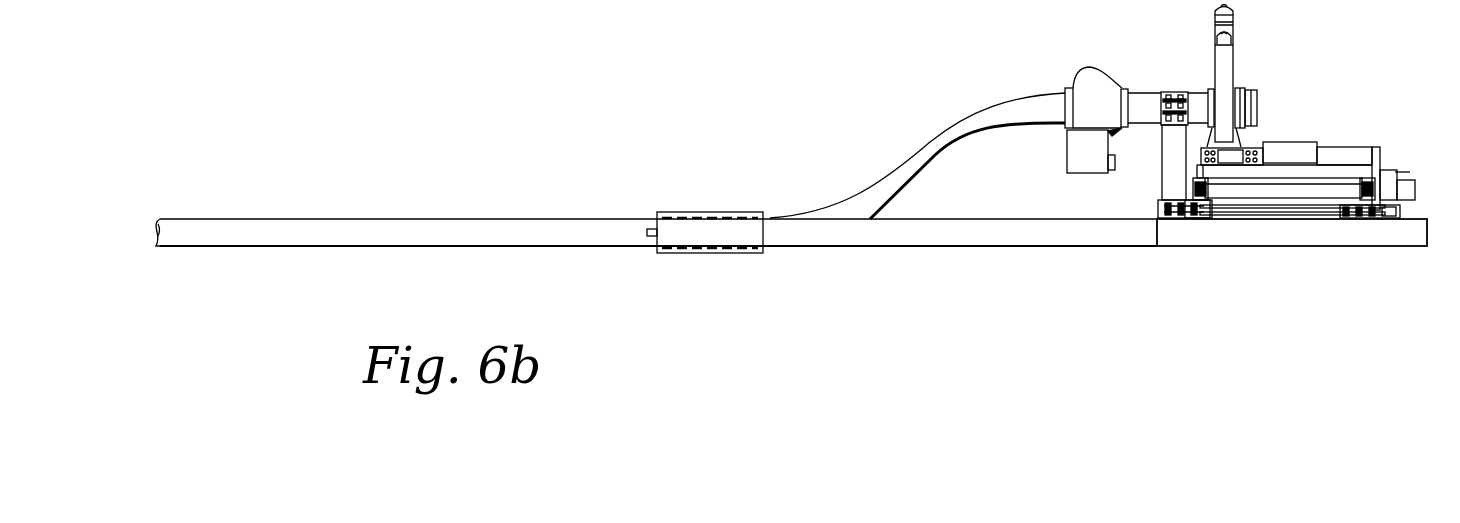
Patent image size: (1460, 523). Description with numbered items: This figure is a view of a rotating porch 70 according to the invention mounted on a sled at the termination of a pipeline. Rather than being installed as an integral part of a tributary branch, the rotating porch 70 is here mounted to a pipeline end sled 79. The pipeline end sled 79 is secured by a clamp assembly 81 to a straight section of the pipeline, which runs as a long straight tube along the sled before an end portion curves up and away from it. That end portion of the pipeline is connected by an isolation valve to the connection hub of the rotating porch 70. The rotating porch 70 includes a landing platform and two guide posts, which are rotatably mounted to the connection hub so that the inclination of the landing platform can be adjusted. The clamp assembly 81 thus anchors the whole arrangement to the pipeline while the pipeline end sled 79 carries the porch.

The rotating porch 70 is at (1371, 65).
The pipeline end sled 79 is at (1060, 246).
The clamp assembly 81 is at (710, 212).